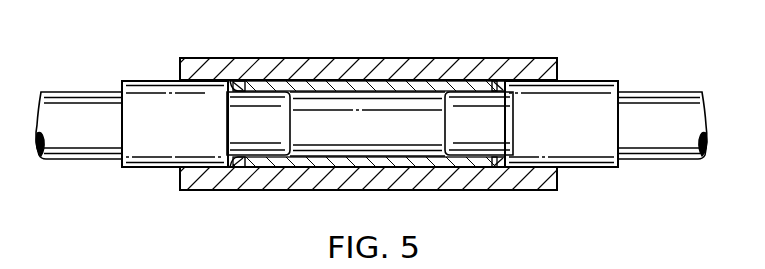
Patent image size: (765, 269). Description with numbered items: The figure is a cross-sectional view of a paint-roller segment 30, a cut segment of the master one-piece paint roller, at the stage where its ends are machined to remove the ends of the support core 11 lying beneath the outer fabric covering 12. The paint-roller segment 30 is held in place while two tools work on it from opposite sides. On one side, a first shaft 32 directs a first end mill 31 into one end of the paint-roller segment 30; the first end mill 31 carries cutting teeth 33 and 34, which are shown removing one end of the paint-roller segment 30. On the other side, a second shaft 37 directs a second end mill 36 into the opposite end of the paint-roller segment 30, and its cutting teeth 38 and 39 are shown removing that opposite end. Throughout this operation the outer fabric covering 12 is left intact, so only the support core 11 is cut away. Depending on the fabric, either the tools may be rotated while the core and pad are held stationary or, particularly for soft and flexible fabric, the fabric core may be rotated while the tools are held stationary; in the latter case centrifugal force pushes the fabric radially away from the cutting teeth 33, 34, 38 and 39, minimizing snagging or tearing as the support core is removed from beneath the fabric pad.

The inner tube 11 is at (341, 84).
The outer fabric covering 12 is at (400, 63).
The paint-roller segment 30 is at (302, 192).
The first end mill 31 is at (157, 148).
The first shaft 32 is at (84, 136).
The cutting tooth 33 is at (238, 81).
The cutting tooth 34 is at (241, 166).
The second end mill 36 is at (573, 146).
The second shaft 37 is at (663, 135).
The cutting tooth 38 is at (496, 82).
The cutting tooth 39 is at (495, 166).